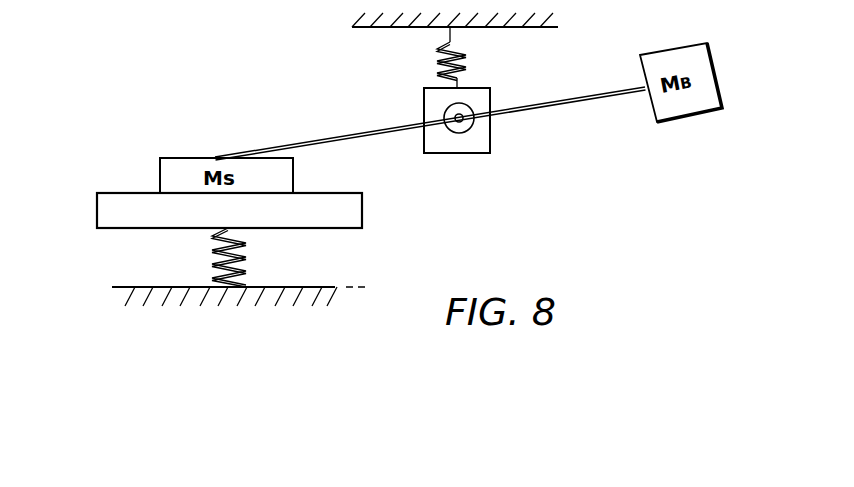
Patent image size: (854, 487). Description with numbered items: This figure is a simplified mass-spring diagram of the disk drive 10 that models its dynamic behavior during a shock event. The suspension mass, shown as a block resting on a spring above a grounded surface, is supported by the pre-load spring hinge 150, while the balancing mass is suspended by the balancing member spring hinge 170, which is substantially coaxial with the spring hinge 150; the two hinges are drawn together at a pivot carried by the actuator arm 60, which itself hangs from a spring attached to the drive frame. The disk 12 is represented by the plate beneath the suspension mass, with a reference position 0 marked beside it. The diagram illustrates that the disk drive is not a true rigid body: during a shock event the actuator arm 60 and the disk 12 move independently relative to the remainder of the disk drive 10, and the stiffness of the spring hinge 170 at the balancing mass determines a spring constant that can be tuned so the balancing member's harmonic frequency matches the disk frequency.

The disk drive 10 is at (352, 27).
The disk 12 is at (117, 197).
The reference position 0 is at (82, 212).
The actuator arm 60 is at (470, 153).
The pre-load spring hinge 150 is at (452, 108).
The balancing member spring hinge 170 is at (462, 116).